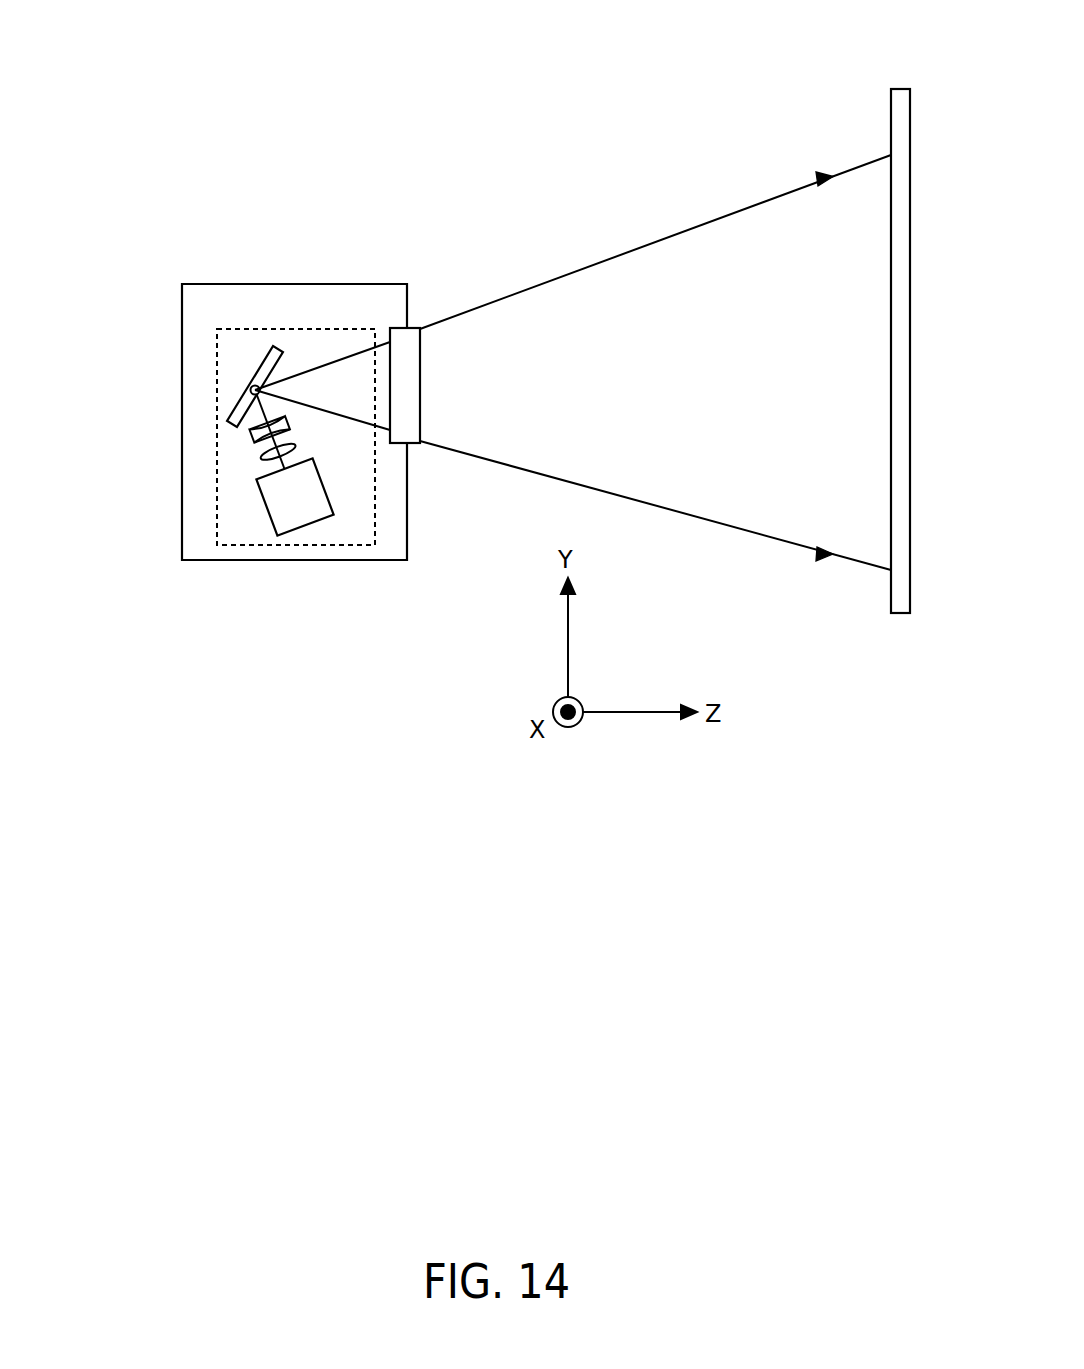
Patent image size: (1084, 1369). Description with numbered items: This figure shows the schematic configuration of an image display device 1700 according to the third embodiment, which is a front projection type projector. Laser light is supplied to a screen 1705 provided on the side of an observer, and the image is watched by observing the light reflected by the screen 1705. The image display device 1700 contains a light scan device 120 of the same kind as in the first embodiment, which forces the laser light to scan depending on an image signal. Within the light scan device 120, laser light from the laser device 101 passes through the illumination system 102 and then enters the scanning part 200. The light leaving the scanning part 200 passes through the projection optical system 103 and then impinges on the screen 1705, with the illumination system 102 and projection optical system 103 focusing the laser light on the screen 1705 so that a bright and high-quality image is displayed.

The image display device 1700 is at (384, 200).
The screen 1705 is at (902, 88).
The light scan device 120 is at (257, 330).
The scanning part 200 is at (232, 408).
The illumination system 102 is at (232, 432).
The laser device 101 is at (295, 517).
The projection optical system 103 is at (413, 445).